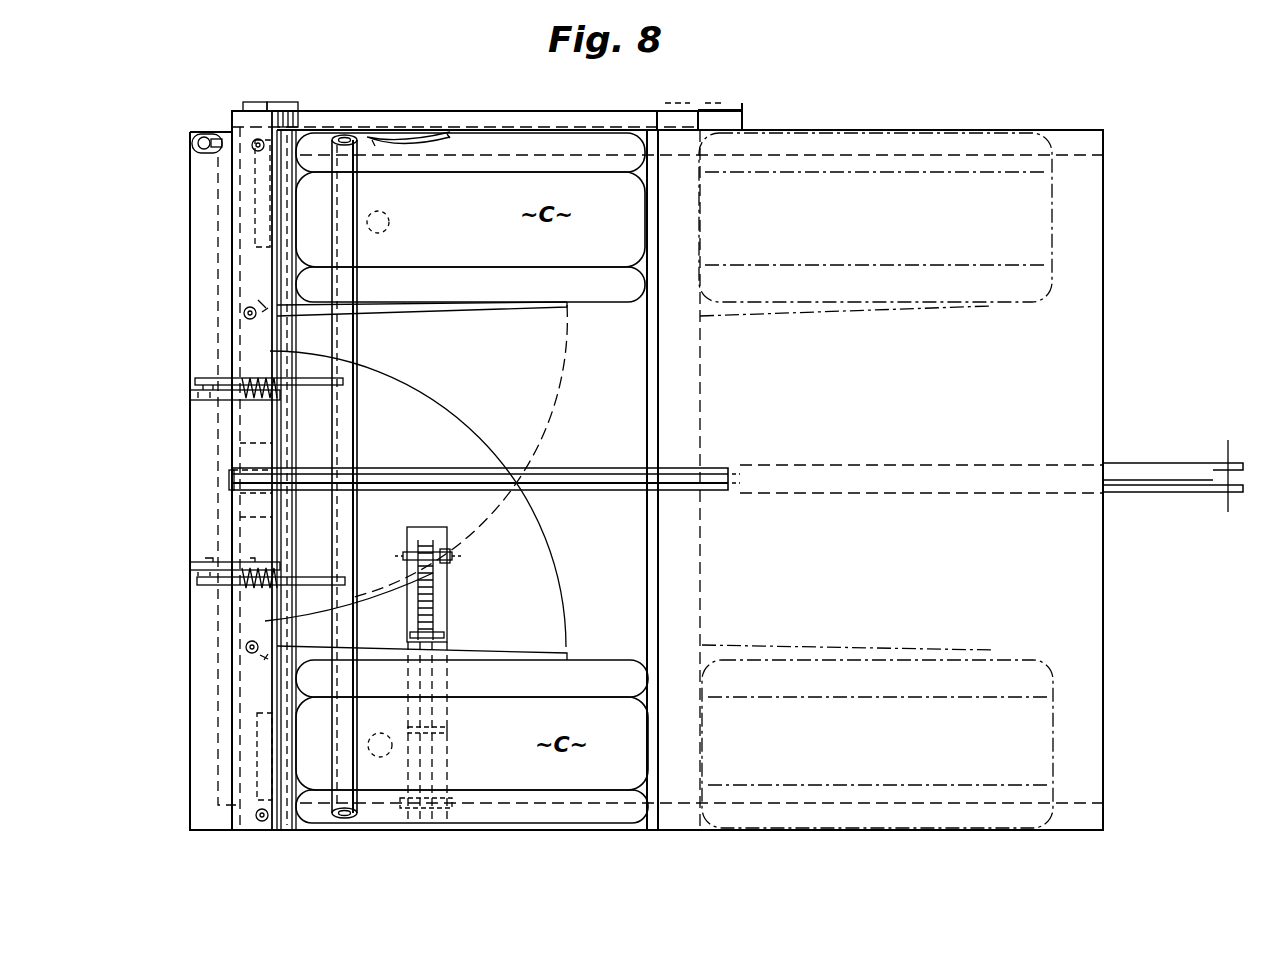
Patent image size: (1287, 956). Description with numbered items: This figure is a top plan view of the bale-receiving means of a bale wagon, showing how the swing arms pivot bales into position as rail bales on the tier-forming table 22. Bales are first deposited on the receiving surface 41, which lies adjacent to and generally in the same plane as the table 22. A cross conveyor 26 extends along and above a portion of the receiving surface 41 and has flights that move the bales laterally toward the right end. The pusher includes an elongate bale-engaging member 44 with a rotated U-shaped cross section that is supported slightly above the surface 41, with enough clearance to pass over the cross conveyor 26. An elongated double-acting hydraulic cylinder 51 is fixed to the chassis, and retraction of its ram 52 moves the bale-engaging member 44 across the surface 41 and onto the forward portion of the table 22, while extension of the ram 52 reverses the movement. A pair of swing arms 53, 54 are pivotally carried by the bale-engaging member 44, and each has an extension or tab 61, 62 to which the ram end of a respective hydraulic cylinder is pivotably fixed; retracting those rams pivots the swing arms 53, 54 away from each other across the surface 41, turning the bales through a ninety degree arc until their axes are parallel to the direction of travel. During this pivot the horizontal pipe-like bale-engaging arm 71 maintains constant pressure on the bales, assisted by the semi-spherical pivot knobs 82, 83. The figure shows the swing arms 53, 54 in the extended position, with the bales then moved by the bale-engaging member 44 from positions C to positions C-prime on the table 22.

The bale-engaging arm 71 is at (346, 135).
The semi-spherical pivot knob 83 is at (392, 220).
The extension or tab 62 is at (258, 306).
The swing arm 54 is at (507, 310).
The receiving surface 41 is at (453, 476).
The ram 52 is at (708, 475).
The double-acting hydraulic cylinder 51 is at (1198, 430).
The bale-engaging member 44 is at (233, 528).
The cross conveyor 26 is at (452, 609).
The swing arm 53 is at (493, 652).
The extension or tab 61 is at (265, 657).
The semi-spherical pivot knob 82 is at (385, 732).
The tier-forming table 22 is at (876, 480).